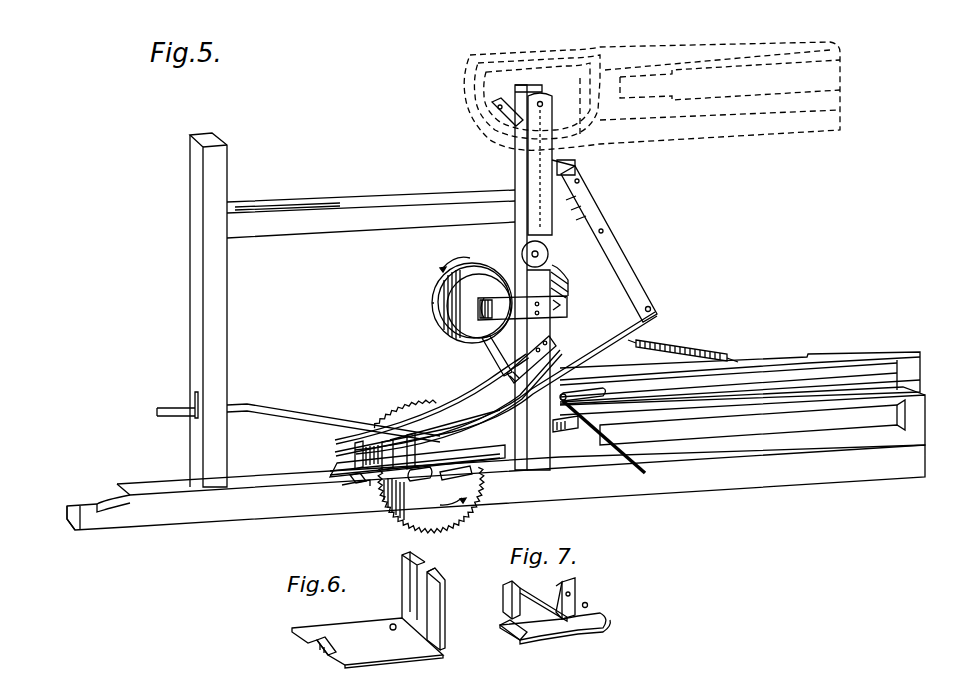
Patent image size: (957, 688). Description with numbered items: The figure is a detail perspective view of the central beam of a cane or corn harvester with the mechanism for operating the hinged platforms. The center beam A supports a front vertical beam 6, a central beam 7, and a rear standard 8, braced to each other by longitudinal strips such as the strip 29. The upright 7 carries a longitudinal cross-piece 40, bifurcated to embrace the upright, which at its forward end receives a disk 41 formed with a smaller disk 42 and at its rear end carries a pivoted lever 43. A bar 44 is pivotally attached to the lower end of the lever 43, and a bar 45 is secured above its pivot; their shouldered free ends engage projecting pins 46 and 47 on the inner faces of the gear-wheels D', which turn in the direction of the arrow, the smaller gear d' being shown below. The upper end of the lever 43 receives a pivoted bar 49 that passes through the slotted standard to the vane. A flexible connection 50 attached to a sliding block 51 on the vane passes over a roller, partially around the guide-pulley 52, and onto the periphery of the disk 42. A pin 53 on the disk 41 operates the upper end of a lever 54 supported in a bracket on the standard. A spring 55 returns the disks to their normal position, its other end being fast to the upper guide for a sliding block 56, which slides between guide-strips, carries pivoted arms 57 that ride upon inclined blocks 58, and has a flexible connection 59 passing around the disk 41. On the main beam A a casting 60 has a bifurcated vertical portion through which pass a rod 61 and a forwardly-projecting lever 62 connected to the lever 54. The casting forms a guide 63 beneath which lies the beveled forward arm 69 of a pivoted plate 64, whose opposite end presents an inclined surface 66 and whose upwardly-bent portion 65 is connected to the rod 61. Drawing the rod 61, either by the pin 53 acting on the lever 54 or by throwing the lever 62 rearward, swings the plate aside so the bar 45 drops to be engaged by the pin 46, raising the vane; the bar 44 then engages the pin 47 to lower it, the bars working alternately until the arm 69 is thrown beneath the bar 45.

In FIG. 5, the center beam A is at (496, 487).
In FIG. 5, the front vertical beam 6 is at (227, 278).
In FIG. 5, the central beam 7 is at (515, 237).
In FIG. 5, the rear standard 8 is at (742, 422).
In FIG. 5, the horizontal beam 29 is at (350, 213).
In FIG. 5, the longitudinal cross-piece 40 is at (567, 312).
In FIG. 5, the disk 41 is at (434, 300).
In FIG. 5, the smaller disk 42 is at (472, 303).
In FIG. 5, the lever 43 is at (625, 238).
In FIG. 5, the bar 44 is at (600, 345).
In FIG. 5, the bar 45 is at (478, 392).
In FIG. 5, the projecting pin 46 is at (445, 430).
In FIG. 5, the projecting pin 47 is at (416, 482).
In FIG. 5, the pivoted bar 49 is at (575, 152).
In FIG. 5, the flexible connection 50 is at (560, 88).
In FIG. 5, the sliding block 51 is at (720, 90).
In FIG. 5, the guide-pulley 52 is at (548, 254).
In FIG. 5, the pin 53 is at (490, 345).
In FIG. 5, the lever 54 is at (512, 394).
In FIG. 5, the spring 55 is at (676, 340).
In FIG. 5, the sliding block 56 is at (615, 393).
In FIG. 5, the pivoted arms 57 is at (623, 433).
In FIG. 5, the inclined blocks 58 is at (572, 428).
In FIG. 5, the flexible connection 59 is at (525, 377).
In FIG. 5, the casting 60 is at (340, 468).
In FIG. 6, the casting 60 is at (353, 620).
In FIG. 5, the rod 61 is at (490, 458).
In FIG. 5, the forwardly-projecting lever 62 is at (335, 418).
In FIG. 5, the guide 63 is at (350, 480).
In FIG. 6, the guide 63 is at (318, 648).
In FIG. 5, the pivoted plate 64 is at (370, 487).
In FIG. 7, the pivoted plate 64 is at (552, 638).
In FIG. 5, the upwardly-bent portion 65 is at (389, 451).
In FIG. 7, the upwardly-bent portion 65 is at (580, 590).
In FIG. 5, the inclined surface 66 is at (355, 450).
In FIG. 7, the inclined surface 66 is at (503, 592).
In FIG. 5, the forward end 69 is at (355, 487).
In FIG. 7, the forward end 69 is at (522, 638).
In FIG. 5, the gear-wheels D' is at (420, 461).
In FIG. 5, the pawl d' is at (456, 477).